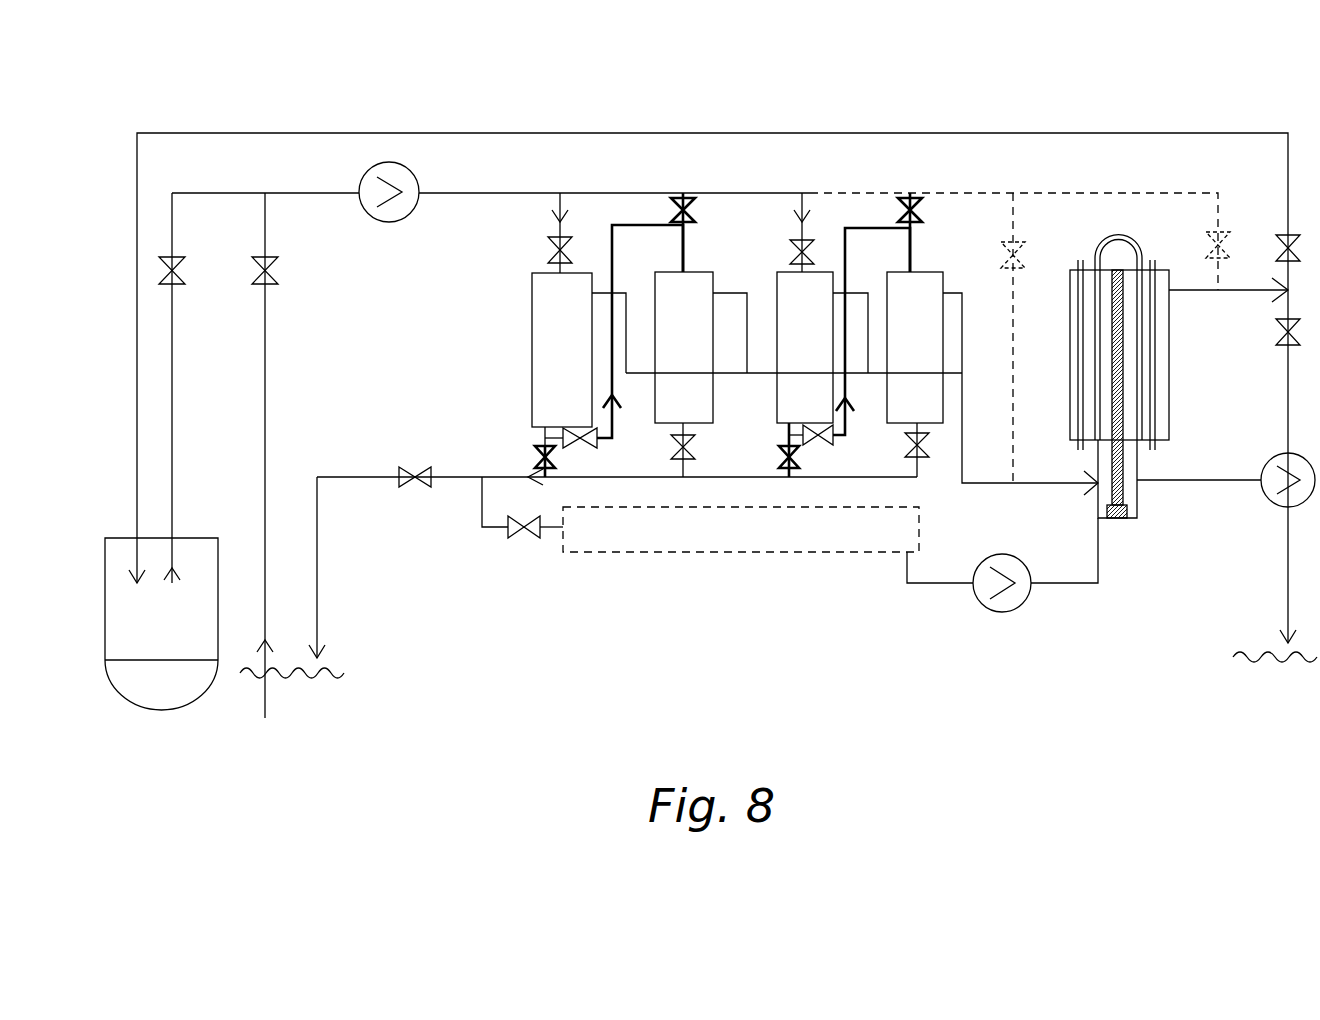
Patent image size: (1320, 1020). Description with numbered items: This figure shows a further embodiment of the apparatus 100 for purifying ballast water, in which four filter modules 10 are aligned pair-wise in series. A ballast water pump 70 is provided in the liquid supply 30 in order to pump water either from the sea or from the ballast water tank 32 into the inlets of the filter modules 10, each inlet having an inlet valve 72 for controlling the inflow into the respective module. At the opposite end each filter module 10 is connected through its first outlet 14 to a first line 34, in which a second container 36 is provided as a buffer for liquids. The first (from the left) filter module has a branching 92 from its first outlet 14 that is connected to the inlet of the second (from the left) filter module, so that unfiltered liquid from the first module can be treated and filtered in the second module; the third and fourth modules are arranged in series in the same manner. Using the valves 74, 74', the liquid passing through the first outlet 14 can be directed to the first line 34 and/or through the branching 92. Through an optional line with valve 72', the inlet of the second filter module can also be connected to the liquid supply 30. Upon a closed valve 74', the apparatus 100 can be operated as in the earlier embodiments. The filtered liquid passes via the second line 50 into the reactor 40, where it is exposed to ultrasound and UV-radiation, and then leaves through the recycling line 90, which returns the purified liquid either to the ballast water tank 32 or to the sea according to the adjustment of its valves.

The apparatus 100 is at (1082, 56).
The recycling line 90 is at (287, 117).
The ballast water pump 70 is at (417, 167).
The liquid supply 30 is at (682, 183).
The inlet valve 72 is at (529, 233).
The valve 72' is at (830, 232).
The branching 92 is at (616, 252).
The filter module 10 is at (522, 327).
The first outlet 14 is at (540, 437).
The valve 74 is at (633, 450).
The valve 74' is at (707, 449).
The ballast water tank 32 is at (185, 525).
The second container 36 is at (751, 557).
The first line 34 is at (946, 587).
The second line 50 is at (967, 493).
The reactor 40 is at (1175, 356).